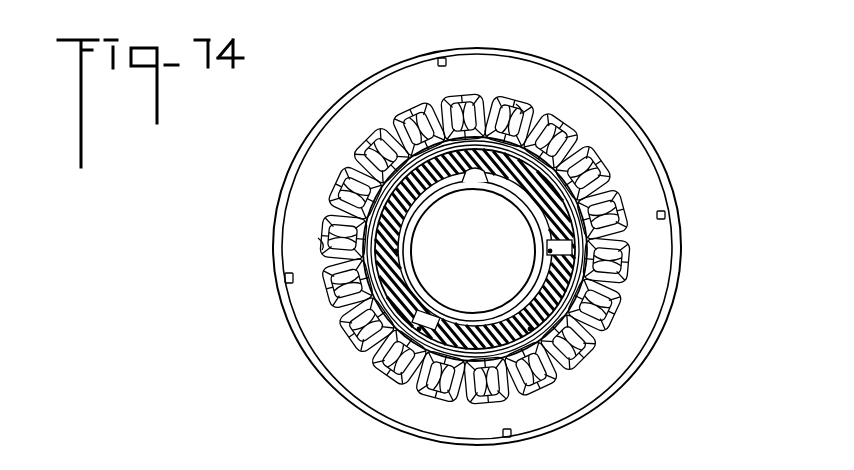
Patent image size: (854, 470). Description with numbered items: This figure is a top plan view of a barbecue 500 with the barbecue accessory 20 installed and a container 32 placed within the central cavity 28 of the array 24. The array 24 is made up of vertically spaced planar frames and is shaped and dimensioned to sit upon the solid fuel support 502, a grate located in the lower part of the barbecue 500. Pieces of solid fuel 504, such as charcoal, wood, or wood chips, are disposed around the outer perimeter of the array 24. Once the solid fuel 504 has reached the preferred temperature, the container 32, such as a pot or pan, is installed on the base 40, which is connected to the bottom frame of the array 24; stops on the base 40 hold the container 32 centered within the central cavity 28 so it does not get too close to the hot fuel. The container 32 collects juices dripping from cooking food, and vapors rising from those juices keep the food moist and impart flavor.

The barbecue accessory 20 is at (523, 234).
The array 24 is at (560, 160).
The central cavity 28 is at (607, 317).
The container 32 is at (453, 267).
The base 40 is at (617, 277).
The barbecue 500 is at (665, 110).
The solid fuel support 502 is at (322, 242).
The solid fuel 504 is at (522, 106).